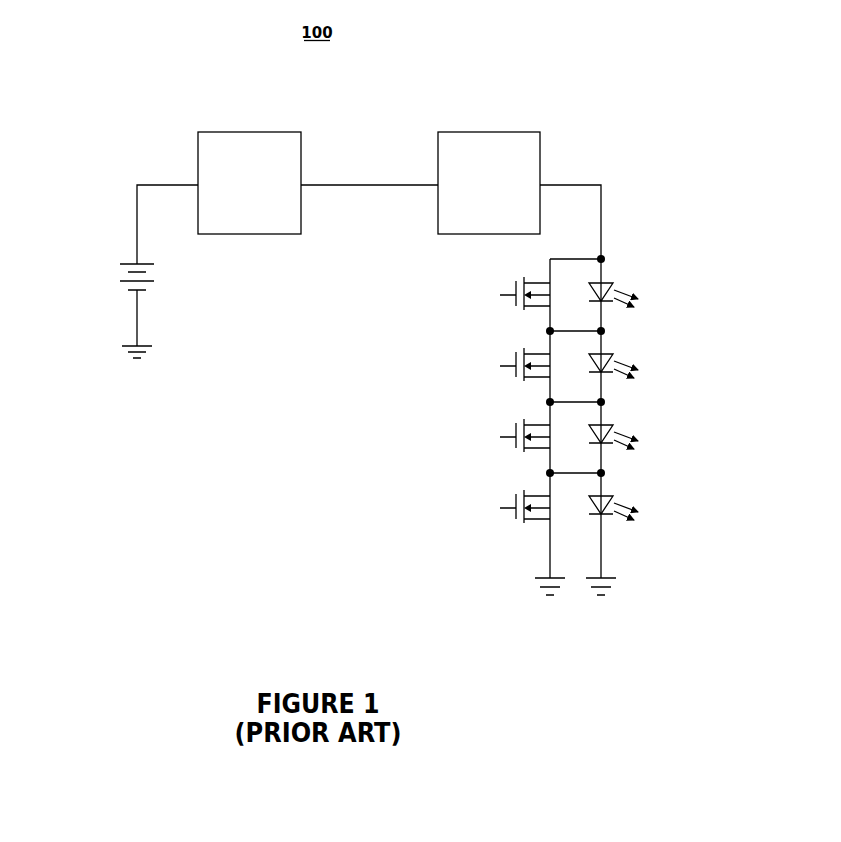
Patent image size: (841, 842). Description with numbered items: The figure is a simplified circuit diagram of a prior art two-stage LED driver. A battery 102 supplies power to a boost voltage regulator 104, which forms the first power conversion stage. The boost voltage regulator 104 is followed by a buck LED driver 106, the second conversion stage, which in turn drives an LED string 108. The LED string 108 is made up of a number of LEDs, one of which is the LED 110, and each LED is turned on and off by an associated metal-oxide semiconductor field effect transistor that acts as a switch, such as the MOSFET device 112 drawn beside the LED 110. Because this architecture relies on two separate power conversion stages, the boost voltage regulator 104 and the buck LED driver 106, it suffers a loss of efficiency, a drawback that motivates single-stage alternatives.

The battery 102 is at (117, 273).
The boost voltage regulator 104 is at (198, 150).
The buck LED driver 106 is at (438, 150).
The LED string 108 is at (651, 229).
The LED 110 is at (648, 283).
The MOSFET device 112 is at (510, 288).